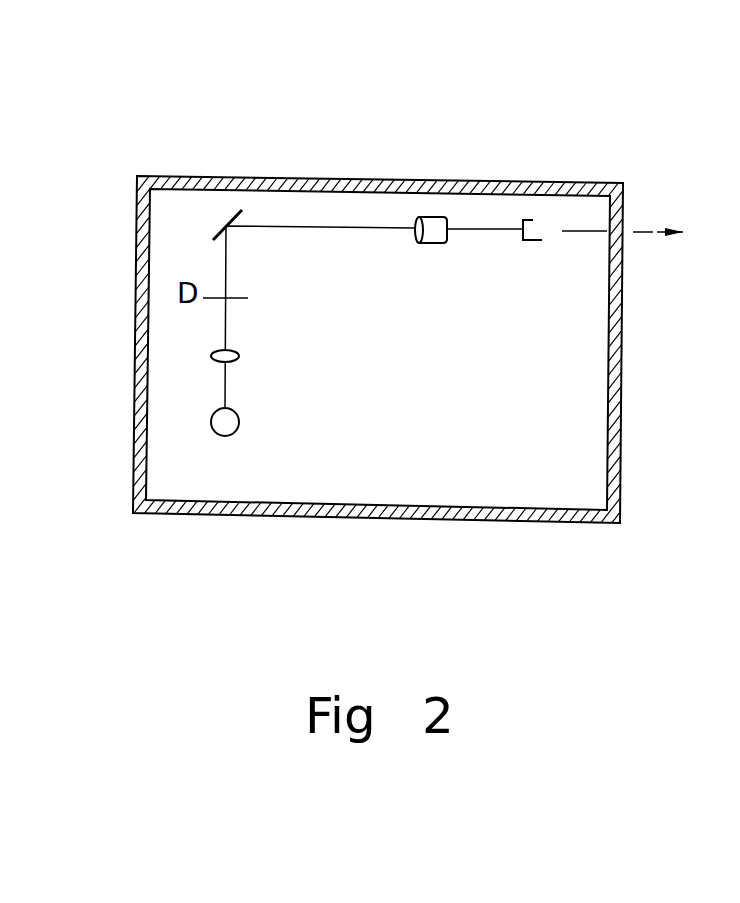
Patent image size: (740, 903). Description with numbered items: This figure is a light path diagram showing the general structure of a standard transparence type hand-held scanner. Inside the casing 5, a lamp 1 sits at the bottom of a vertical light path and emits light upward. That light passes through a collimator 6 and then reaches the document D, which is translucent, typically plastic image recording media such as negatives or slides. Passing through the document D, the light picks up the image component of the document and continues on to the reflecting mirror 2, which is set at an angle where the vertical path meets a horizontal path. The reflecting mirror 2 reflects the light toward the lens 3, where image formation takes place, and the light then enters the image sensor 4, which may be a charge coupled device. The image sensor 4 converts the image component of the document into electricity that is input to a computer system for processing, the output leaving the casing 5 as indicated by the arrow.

The lamp 1 is at (208, 416).
The reflecting mirror 2 is at (232, 209).
The lens 3 is at (430, 216).
The image sensor 4 is at (529, 220).
The casing 5 is at (597, 193).
The collimator 6 is at (213, 355).